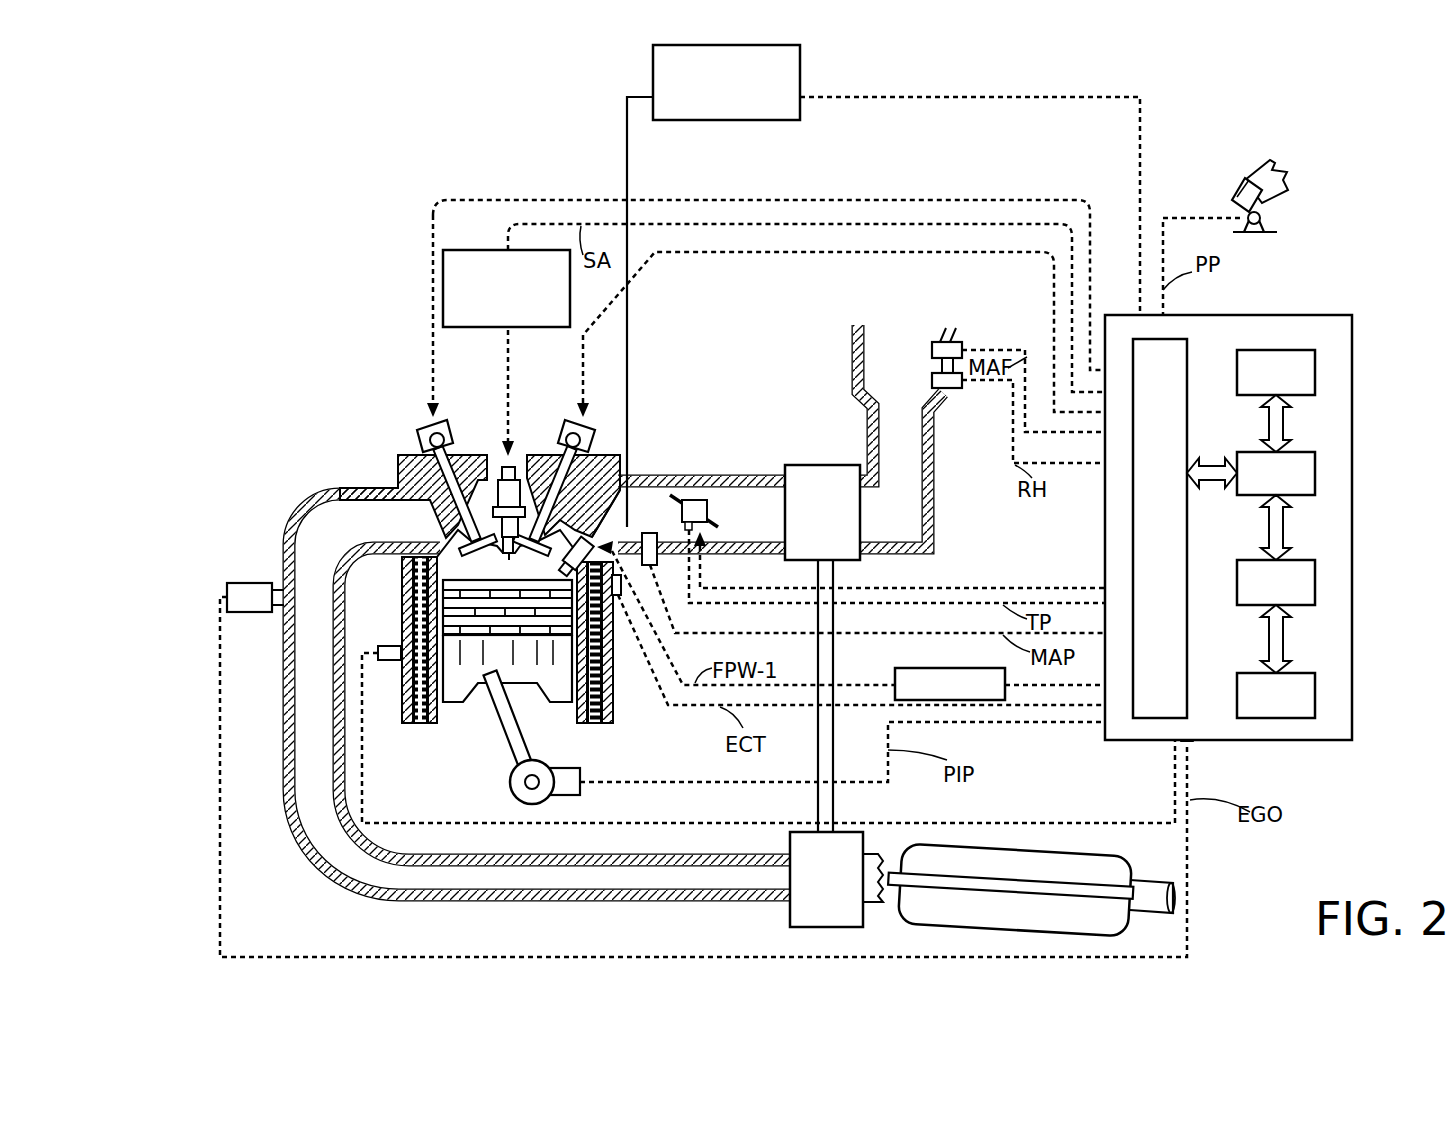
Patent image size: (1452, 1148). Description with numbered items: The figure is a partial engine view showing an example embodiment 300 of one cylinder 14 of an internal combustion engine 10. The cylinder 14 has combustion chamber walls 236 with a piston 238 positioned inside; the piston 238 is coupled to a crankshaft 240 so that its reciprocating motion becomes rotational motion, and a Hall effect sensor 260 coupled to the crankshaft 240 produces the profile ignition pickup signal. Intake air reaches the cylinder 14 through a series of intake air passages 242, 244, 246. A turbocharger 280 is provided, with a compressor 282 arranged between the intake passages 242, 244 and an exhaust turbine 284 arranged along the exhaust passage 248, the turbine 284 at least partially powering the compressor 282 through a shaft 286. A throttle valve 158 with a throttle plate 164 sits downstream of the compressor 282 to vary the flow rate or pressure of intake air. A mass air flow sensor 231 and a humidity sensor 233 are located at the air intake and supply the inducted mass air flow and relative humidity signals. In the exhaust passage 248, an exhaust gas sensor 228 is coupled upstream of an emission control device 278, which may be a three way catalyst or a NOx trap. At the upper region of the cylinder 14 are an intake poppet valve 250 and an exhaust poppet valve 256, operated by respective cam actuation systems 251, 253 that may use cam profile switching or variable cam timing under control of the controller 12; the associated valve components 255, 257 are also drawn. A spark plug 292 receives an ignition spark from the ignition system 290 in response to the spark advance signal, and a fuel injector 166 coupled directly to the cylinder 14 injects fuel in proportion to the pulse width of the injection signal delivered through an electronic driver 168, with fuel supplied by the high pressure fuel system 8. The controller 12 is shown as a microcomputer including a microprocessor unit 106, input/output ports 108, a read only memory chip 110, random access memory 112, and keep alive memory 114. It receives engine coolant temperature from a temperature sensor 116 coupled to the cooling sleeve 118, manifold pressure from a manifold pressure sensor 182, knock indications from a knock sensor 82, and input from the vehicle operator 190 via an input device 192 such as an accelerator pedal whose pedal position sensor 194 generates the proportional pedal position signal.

The example embodiment 300 is at (196, 116).
The internal combustion engine 10 is at (333, 266).
The fuel system 8 is at (800, 60).
The ignition system 290 is at (462, 250).
The input device 192 is at (1233, 195).
The vehicle operator 190 is at (1288, 173).
The pedal position sensor 194 is at (1262, 219).
The input/output ports 108 is at (1188, 350).
The controller 12 is at (1345, 316).
The read only memory chip 110 is at (1317, 370).
The microprocessor unit 106 is at (1317, 470).
The random access memory 112 is at (1317, 580).
The keep alive memory 114 is at (1317, 690).
The mass air flow sensor 231 is at (953, 338).
The intake air passage 242 is at (918, 359).
The humidity sensor 233 is at (950, 391).
The compressor 282 is at (808, 465).
The cam actuation system 253 is at (452, 418).
The cam actuation system 251 is at (562, 418).
The intake valve 255 is at (550, 535).
The exhaust cam actuator 257 is at (422, 443).
The exhaust poppet valve 256 is at (465, 540).
The spark plug 292 is at (498, 487).
The intake poppet valve 250 is at (517, 500).
The throttle plate 164 is at (670, 497).
The throttle valve 158 is at (695, 498).
The exhaust passage 248 is at (388, 532).
The intake air passage 246 is at (665, 521).
The intake air passage 244 is at (772, 521).
The fuel injector 166 is at (726, 391).
The exhaust gas sensor 228 is at (227, 588).
The cylinder 14 is at (503, 562).
The knock sensor 82 is at (393, 647).
The manifold pressure sensor 182 is at (658, 568).
The electronic driver 168 is at (895, 670).
The temperature sensor 116 is at (619, 605).
The cooling sleeve 118 is at (613, 705).
The combustion chamber walls 236 is at (442, 715).
The piston 238 is at (490, 672).
The crankshaft 240 is at (515, 798).
The Hall effect sensor 260 is at (565, 795).
The turbocharger 280 is at (790, 810).
The shaft 286 is at (833, 792).
The emission control device 278 is at (1100, 852).
The exhaust turbine 284 is at (790, 912).